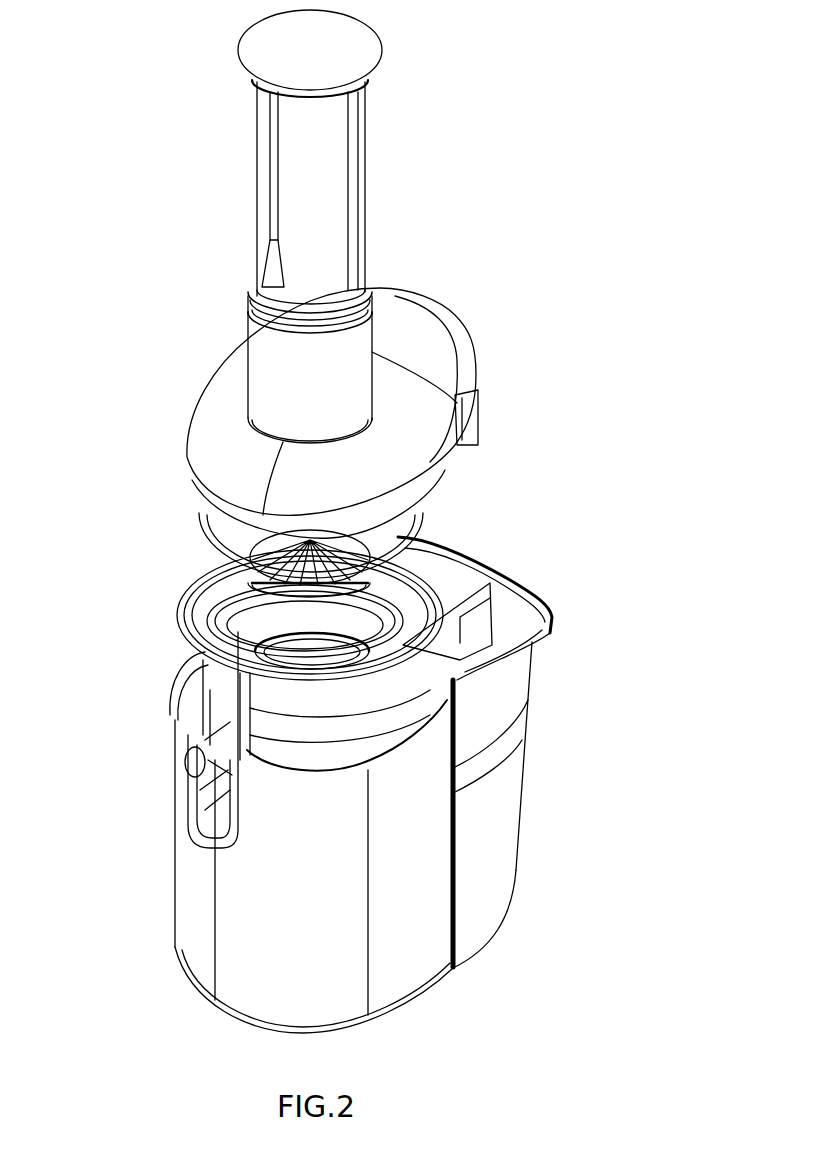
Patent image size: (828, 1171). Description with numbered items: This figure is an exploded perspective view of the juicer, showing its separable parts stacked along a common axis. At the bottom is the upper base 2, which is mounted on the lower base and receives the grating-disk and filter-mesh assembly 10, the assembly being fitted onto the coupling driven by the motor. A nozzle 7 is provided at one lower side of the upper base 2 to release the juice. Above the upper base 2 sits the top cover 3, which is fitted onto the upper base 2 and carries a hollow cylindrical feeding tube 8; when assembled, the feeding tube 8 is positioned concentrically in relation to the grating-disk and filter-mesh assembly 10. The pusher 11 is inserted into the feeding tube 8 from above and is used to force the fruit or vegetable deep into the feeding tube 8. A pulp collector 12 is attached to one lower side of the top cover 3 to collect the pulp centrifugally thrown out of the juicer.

The pusher 11 is at (260, 173).
The feeding tube 8 is at (270, 357).
The top cover 3 is at (195, 417).
The grating-disk and filter-mesh assembly 10 is at (425, 530).
The upper base 2 is at (187, 598).
The nozzle 7 is at (183, 750).
The pulp collector 12 is at (485, 698).